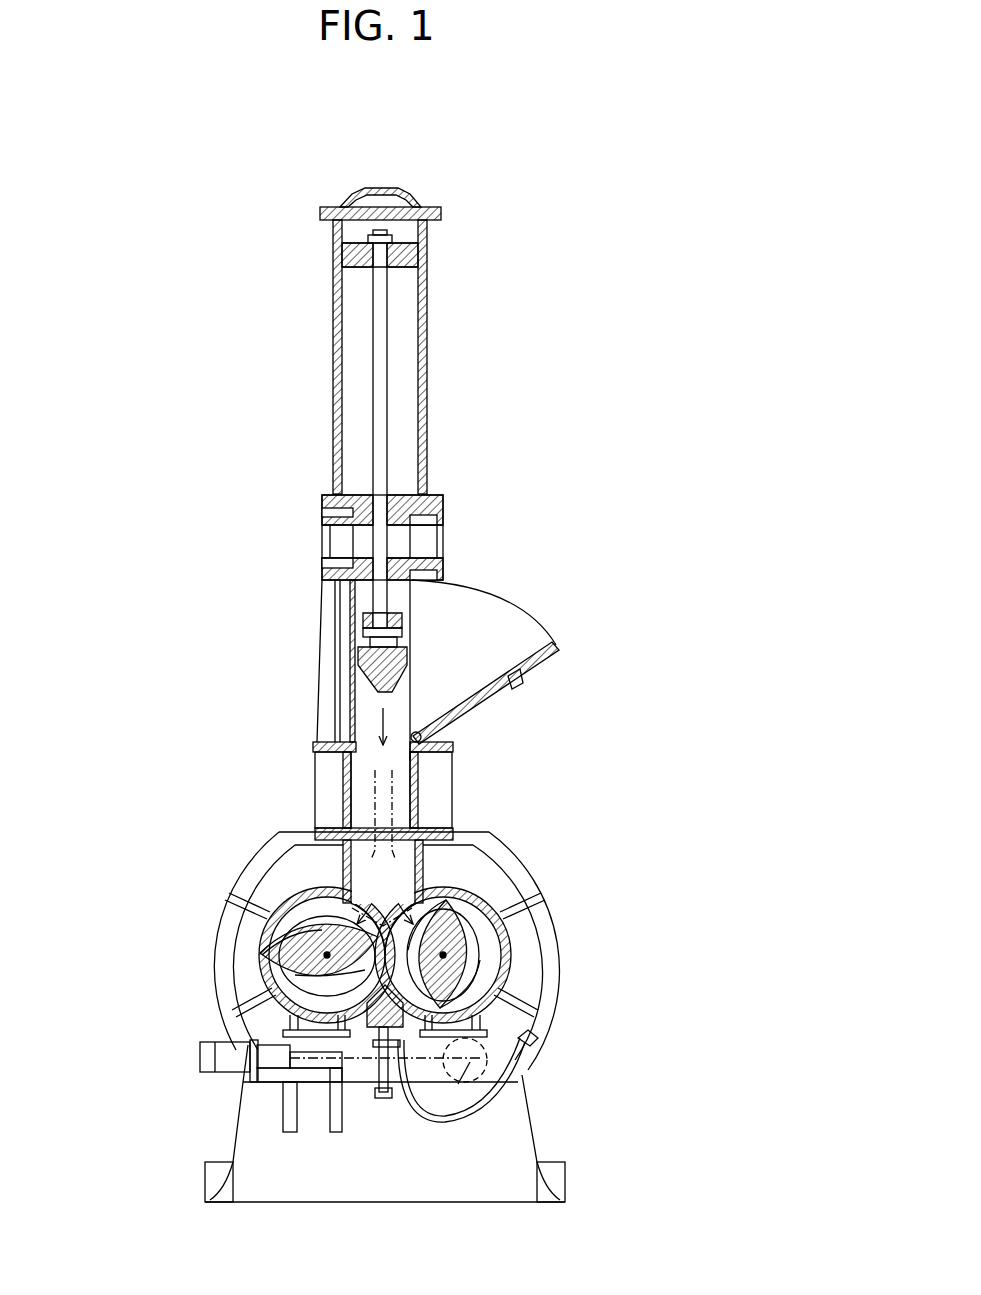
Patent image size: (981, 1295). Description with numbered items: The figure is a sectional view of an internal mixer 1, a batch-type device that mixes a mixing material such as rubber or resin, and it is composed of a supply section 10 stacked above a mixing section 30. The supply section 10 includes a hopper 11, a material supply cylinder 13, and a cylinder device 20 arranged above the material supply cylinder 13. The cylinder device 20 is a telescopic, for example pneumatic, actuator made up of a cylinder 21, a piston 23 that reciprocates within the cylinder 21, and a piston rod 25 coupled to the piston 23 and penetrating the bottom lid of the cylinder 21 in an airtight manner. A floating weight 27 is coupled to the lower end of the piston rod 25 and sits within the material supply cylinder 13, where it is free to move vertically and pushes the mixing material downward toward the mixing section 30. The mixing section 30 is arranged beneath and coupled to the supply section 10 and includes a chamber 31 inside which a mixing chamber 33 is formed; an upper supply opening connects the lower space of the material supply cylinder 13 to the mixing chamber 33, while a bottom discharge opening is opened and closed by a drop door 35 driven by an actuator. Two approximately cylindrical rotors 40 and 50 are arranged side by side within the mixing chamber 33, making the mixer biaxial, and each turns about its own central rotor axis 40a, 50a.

The internal mixer 1 is at (590, 160).
The supply section 10 is at (120, 713).
The hopper 11 is at (503, 612).
The material supply cylinder 13 is at (420, 788).
The cylinder device 20 is at (273, 363).
The cylinder 21 is at (428, 340).
The piston 23 is at (428, 252).
The piston rod 25 is at (385, 402).
The floating weight 27 is at (355, 660).
The mixing section 30 is at (138, 866).
The chamber 31 is at (503, 932).
The mixing chamber 33 is at (298, 995).
The drop door 35 is at (375, 1022).
The rotor 40 is at (452, 950).
The rotor axis 40a is at (465, 975).
The rotor 50 is at (280, 955).
The rotor axis 50a is at (283, 970).